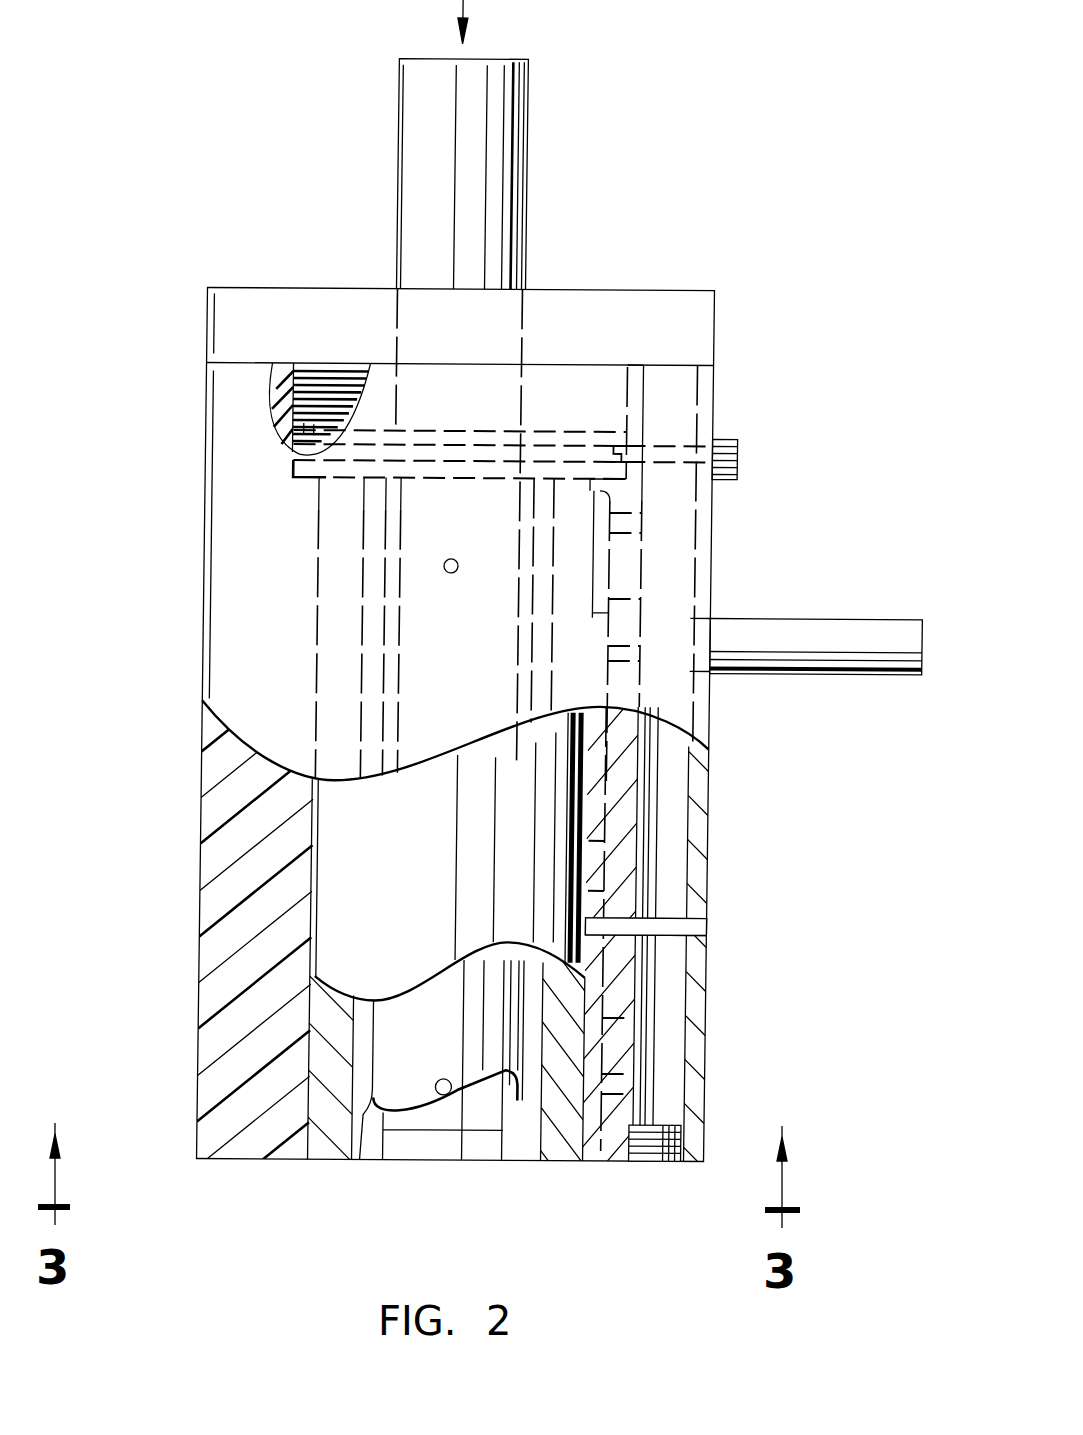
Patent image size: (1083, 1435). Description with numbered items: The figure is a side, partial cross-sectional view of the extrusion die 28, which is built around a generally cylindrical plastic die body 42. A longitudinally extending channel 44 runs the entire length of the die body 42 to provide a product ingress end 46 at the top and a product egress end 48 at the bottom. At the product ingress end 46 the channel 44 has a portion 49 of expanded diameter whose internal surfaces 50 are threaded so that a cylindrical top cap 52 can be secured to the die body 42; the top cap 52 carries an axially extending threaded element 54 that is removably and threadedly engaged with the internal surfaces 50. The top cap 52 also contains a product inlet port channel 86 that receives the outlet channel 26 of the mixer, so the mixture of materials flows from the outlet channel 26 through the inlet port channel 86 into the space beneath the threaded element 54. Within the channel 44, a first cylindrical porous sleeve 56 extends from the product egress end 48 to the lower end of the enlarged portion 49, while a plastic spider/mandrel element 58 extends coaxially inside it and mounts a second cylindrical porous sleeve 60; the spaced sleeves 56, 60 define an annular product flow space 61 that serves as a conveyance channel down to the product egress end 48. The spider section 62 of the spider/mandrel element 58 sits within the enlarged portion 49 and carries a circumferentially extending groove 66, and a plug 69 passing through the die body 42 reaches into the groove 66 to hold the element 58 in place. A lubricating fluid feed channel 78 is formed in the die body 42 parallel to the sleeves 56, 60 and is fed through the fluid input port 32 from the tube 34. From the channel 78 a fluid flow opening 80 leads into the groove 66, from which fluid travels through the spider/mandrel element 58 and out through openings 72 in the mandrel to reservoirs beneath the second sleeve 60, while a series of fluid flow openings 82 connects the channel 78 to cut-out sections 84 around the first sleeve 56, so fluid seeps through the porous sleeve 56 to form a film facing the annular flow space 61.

The outlet channel 26 is at (524, 180).
The extrusion die 28 is at (190, 395).
The fluid input port 32 is at (711, 607).
The tube 34 is at (800, 617).
The die body 42 is at (208, 652).
The channel 44 is at (578, 1162).
The product ingress end 46 is at (627, 366).
The product egress end 48 is at (306, 1162).
The portion of expanded diameter 49 is at (618, 384).
The internal surfaces 50 is at (321, 368).
The top cap 52 is at (650, 291).
The threaded element 54 is at (338, 388).
The first cylindrical porous sleeve 56 is at (345, 828).
The spider/mandrel element 58 is at (494, 1162).
The second cylindrical porous sleeve 60 is at (350, 1162).
The annular product flow space 61 is at (540, 667).
The spider section 62 is at (290, 430).
The circumferentially extending groove 66 is at (487, 463).
The plug 69 is at (736, 462).
The openings 72 is at (447, 574).
The lubricating fluid feed channel 78 is at (688, 852).
The fluid flow opening 80 is at (623, 445).
The fluid flow openings 82 is at (628, 528).
The cut-out sections 84 is at (610, 612).
The product inlet port channel 86 is at (517, 318).